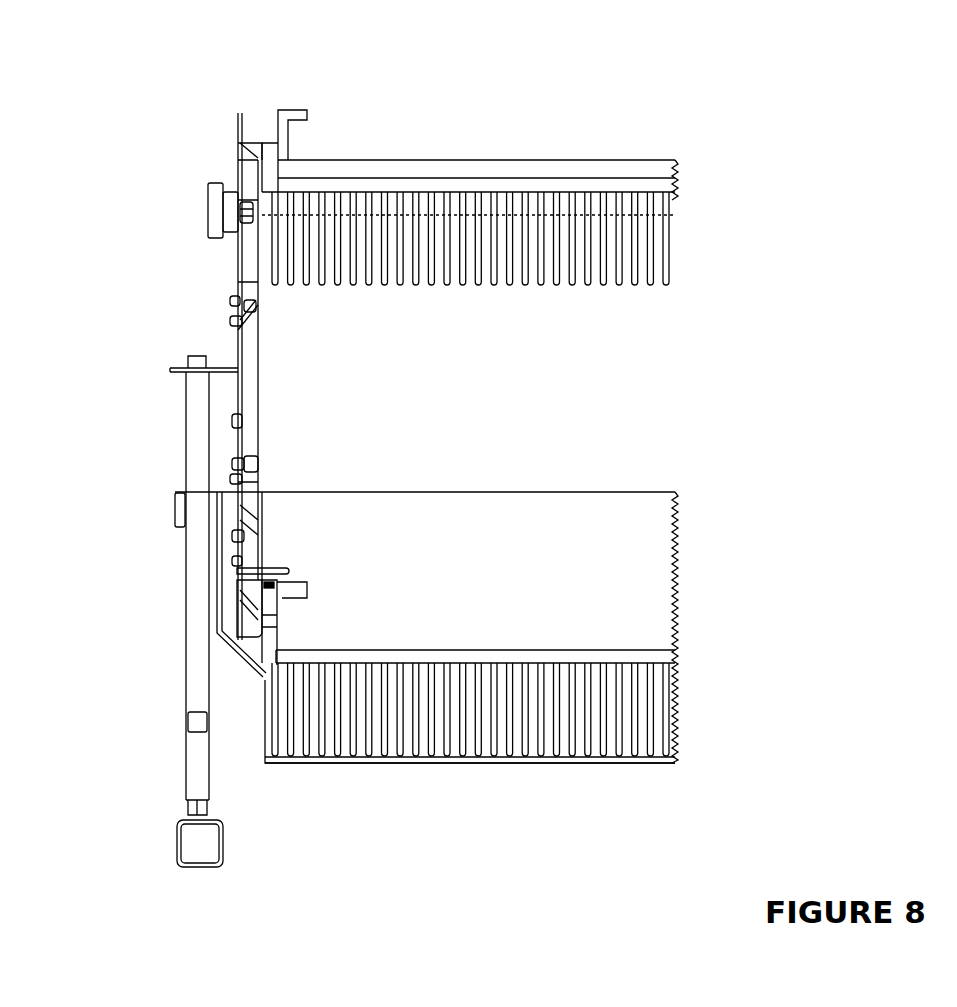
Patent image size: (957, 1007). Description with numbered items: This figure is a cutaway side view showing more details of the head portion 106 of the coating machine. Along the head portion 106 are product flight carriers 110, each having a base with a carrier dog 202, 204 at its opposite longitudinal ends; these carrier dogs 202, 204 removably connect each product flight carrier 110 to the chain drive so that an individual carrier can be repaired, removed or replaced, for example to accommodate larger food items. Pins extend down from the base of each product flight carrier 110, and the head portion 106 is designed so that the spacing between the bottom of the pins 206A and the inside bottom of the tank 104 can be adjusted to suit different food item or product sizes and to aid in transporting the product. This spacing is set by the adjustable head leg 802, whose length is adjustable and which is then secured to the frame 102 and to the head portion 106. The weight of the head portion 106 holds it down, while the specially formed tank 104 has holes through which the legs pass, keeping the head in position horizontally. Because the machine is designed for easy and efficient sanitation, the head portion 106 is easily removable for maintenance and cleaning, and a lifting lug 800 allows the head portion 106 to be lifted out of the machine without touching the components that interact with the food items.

The head portion 106 is at (238, 113).
The lifting lug 800 is at (208, 213).
The carrier dog 202 is at (400, 139).
The carrier dog 204 is at (306, 127).
The product flight carrier 110 is at (608, 154).
The tank 104 is at (375, 765).
The bottom of the pins 206A is at (628, 761).
The adjustable head leg 802 is at (188, 770).
The frame 102 is at (197, 868).